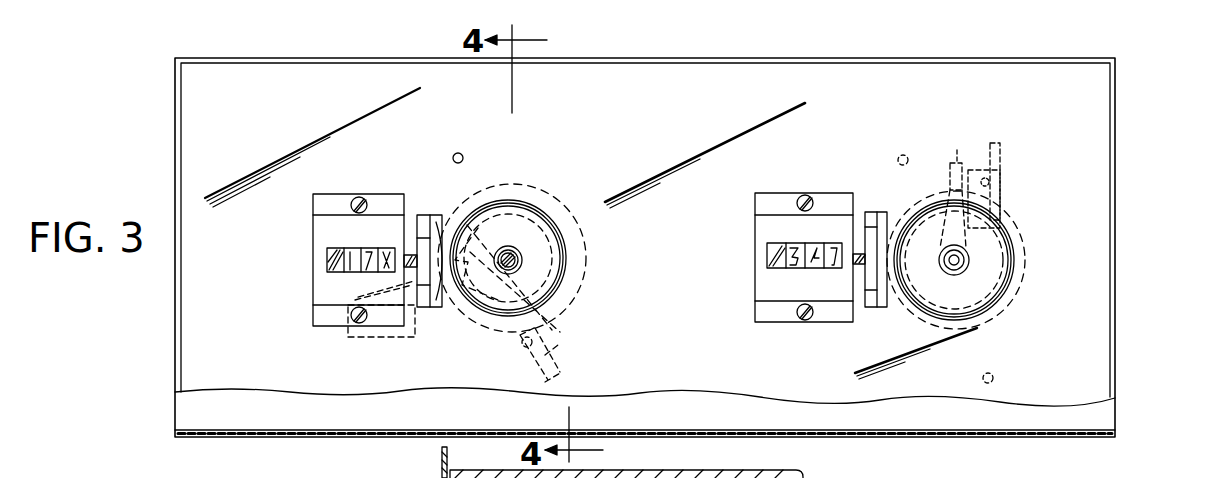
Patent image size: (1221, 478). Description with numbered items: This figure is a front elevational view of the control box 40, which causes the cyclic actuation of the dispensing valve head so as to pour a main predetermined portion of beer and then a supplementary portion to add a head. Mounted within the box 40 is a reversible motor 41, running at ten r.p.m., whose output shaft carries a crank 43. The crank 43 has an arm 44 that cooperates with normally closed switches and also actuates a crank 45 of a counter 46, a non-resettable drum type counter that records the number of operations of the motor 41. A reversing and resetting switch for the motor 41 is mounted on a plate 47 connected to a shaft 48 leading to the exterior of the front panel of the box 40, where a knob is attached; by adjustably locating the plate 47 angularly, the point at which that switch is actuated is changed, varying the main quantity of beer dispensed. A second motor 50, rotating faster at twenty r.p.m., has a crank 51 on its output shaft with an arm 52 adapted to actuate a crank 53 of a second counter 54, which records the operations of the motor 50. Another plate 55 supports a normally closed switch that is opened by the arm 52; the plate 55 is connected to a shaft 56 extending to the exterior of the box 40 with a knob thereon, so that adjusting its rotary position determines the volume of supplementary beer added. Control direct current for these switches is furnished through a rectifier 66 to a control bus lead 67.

The control box 40 is at (1120, 245).
The reversible motor 41 is at (528, 183).
The crank 43 is at (507, 278).
The arm 44 is at (440, 205).
The crank 45 is at (421, 215).
The counter 46 is at (307, 228).
The plate 47 is at (565, 356).
The shaft 48 is at (518, 236).
The motor 50 is at (1026, 248).
The crank 51 is at (948, 190).
The arm 52 is at (958, 145).
The crank 53 is at (884, 212).
The counter 54 is at (748, 228).
The plate 55 is at (1003, 152).
The shaft 56 is at (953, 275).
The rectifier 66 is at (993, 375).
The control bus lead 67 is at (905, 154).